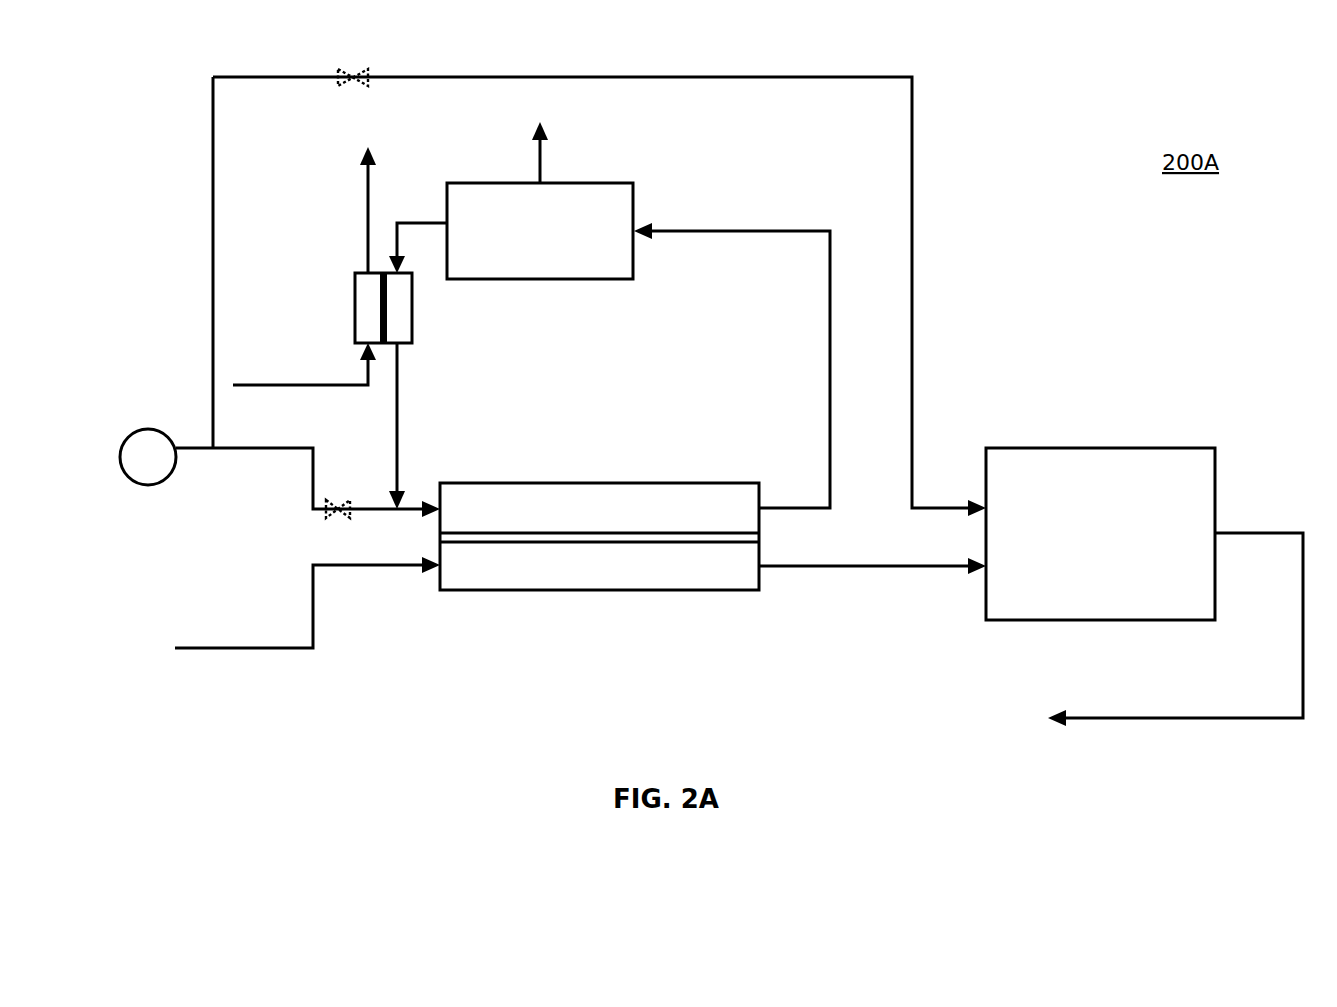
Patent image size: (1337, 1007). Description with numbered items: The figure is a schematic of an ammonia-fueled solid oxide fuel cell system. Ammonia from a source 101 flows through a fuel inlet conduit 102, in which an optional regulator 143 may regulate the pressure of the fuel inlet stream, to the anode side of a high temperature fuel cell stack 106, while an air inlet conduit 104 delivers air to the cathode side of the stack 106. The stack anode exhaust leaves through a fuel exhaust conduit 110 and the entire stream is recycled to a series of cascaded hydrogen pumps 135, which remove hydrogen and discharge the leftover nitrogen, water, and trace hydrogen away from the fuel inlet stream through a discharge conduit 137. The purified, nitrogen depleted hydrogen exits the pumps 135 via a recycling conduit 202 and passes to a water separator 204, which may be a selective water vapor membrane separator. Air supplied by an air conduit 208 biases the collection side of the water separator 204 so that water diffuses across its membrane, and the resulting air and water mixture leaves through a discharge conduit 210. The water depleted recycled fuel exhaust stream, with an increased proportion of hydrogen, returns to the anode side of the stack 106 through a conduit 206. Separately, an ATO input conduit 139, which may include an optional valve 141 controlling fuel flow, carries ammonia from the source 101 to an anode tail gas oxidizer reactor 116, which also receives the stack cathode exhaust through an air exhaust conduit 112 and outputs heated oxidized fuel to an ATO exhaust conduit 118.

The source 101 is at (148, 486).
The fuel inlet conduit 102 is at (312, 480).
The air inlet conduit 104 is at (315, 632).
The high temperature fuel cell stack 106 is at (476, 483).
The fuel exhaust conduit 110 is at (830, 353).
The air exhaust conduit 112 is at (838, 567).
The anode tail gas oxidizer reactor 116 is at (998, 448).
The ATO exhaust conduit 118 is at (1282, 533).
The cascaded hydrogen pumps 135 is at (476, 183).
The discharge conduit 137 is at (544, 165).
The ATO input conduit 139 is at (213, 213).
The valve 141 is at (347, 75).
The regulator 143 is at (340, 512).
The recycling conduit 202 is at (418, 222).
The water separator 204 is at (413, 313).
The conduit 206 is at (400, 406).
The air conduit 208 is at (338, 386).
The discharge conduit 210 is at (368, 225).